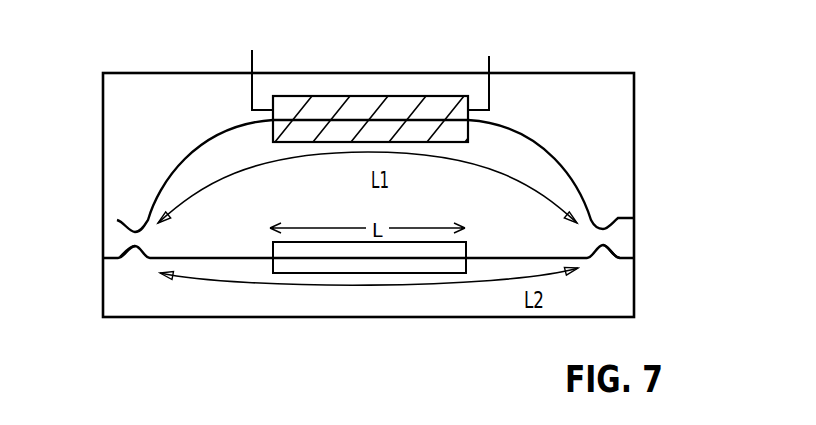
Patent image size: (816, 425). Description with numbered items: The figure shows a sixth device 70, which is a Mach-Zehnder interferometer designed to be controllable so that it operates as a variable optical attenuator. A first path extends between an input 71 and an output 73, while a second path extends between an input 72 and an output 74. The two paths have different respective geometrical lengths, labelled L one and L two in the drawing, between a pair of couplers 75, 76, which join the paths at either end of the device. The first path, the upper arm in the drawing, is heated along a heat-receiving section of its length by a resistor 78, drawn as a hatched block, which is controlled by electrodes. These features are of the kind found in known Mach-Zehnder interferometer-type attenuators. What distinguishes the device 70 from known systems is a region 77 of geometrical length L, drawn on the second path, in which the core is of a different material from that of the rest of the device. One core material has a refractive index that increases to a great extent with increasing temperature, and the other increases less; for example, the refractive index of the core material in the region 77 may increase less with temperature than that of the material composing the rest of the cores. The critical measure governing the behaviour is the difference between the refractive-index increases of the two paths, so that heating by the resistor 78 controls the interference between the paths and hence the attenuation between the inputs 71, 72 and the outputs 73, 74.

The sixth device 70 is at (634, 110).
The input 71 is at (117, 220).
The input 72 is at (103, 258).
The output 73 is at (634, 218).
The output 74 is at (634, 257).
The coupler 75 is at (137, 253).
The coupler 76 is at (605, 257).
The region 77 is at (375, 273).
The resistor 78 is at (367, 96).